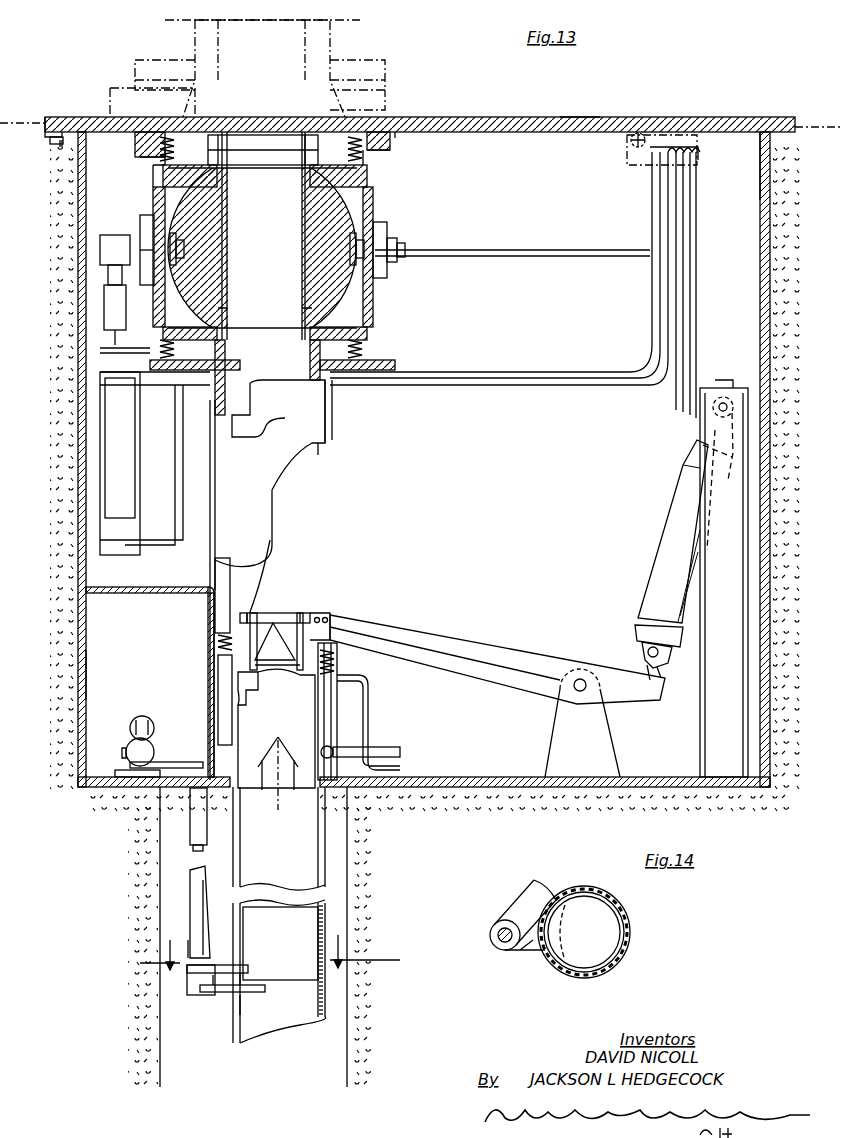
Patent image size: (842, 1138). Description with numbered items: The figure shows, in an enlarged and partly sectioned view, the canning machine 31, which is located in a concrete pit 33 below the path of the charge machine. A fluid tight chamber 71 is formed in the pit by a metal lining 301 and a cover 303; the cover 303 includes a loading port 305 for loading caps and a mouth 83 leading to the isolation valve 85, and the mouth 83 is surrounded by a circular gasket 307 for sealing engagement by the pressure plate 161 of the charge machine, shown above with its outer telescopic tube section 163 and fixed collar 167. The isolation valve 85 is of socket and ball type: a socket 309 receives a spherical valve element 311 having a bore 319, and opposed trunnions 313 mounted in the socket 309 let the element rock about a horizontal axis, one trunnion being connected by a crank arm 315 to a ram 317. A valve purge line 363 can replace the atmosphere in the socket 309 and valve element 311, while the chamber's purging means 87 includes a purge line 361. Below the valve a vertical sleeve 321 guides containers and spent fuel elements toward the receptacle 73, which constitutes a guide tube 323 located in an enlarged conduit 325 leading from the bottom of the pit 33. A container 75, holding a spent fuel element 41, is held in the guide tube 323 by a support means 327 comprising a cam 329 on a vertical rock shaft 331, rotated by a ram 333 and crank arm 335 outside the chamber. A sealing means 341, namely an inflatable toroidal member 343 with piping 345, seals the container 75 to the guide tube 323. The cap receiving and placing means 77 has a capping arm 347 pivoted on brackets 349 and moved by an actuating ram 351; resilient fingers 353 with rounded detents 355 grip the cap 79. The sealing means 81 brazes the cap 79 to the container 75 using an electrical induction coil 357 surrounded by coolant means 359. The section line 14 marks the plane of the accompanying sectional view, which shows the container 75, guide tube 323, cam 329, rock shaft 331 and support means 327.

In FIG. 13, the circular gasket 307 is at (122, 117).
In FIG. 13, the cover 303 is at (395, 132).
In FIG. 13, the loading port 305 is at (562, 117).
In FIG. 13, the fluid tight chamber 71 is at (714, 140).
In FIG. 13, the pressure plate 161 is at (122, 88).
In FIG. 13, the outer telescopic tube section 163 is at (195, 40).
In FIG. 13, the collar 167 is at (368, 60).
In FIG. 13, the mouth 83 is at (312, 125).
In FIG. 13, the metal lining 301 is at (760, 200).
In FIG. 13, the pit 33 is at (92, 665).
In FIG. 13, the socket 309 is at (373, 195).
In FIG. 13, the valve element 311 is at (222, 212).
In FIG. 13, the isolation valve 85 is at (263, 236).
In FIG. 13, the bore 319 is at (226, 312).
In FIG. 13, the trunnions 313 is at (170, 250).
In FIG. 13, the crank arm 315 is at (112, 281).
In FIG. 13, the valve purge line 363 is at (545, 256).
In FIG. 13, the purging means 87 is at (625, 152).
In FIG. 13, the purge line 361 is at (628, 168).
In FIG. 13, the ram 317 is at (135, 485).
In FIG. 13, the vertical sleeve 321 is at (325, 412).
In FIG. 13, the canning machine 31 is at (572, 435).
In FIG. 13, the rounded detent 355 is at (218, 650).
In FIG. 13, the resilient fingers 353 is at (270, 613).
In FIG. 13, the cap 79 is at (278, 630).
In FIG. 13, the sealing means 81 is at (345, 660).
In FIG. 13, the electrical induction coil 357 is at (340, 665).
In FIG. 13, the coolant means 359 is at (318, 697).
In FIG. 13, the toroidal member 343 is at (340, 745).
In FIG. 13, the piping 345 is at (400, 752).
In FIG. 13, the sealing means 341 is at (350, 748).
In FIG. 13, the spent fuel element 41 is at (278, 784).
In FIG. 13, the ram 333 is at (160, 730).
In FIG. 13, the crank arm 335 is at (178, 762).
In FIG. 13, the cap receiving and placing means 77 is at (470, 652).
In FIG. 13, the capping arm 347 is at (542, 665).
In FIG. 13, the brackets 349 is at (615, 735).
In FIG. 13, the actuating ram 351 is at (678, 522).
In FIG. 13, the conduit 325 is at (360, 1060).
In FIG. 13, the receptacle 73 is at (325, 845).
In FIG. 13, the guide tube 323 is at (330, 920).
In FIG. 14, the guide tube 323 is at (625, 955).
In FIG. 13, the container 75 is at (310, 975).
In FIG. 14, the container 75 is at (605, 920).
In FIG. 13, the rock shaft 331 is at (200, 850).
In FIG. 14, the rock shaft 331 is at (505, 950).
In FIG. 13, the support means 327 is at (222, 1002).
In FIG. 14, the support means 327 is at (548, 882).
In FIG. 13, the cam 329 is at (233, 1005).
In FIG. 14, the cam 329 is at (530, 950).
In FIG. 13, the section line 14 is at (270, 947).